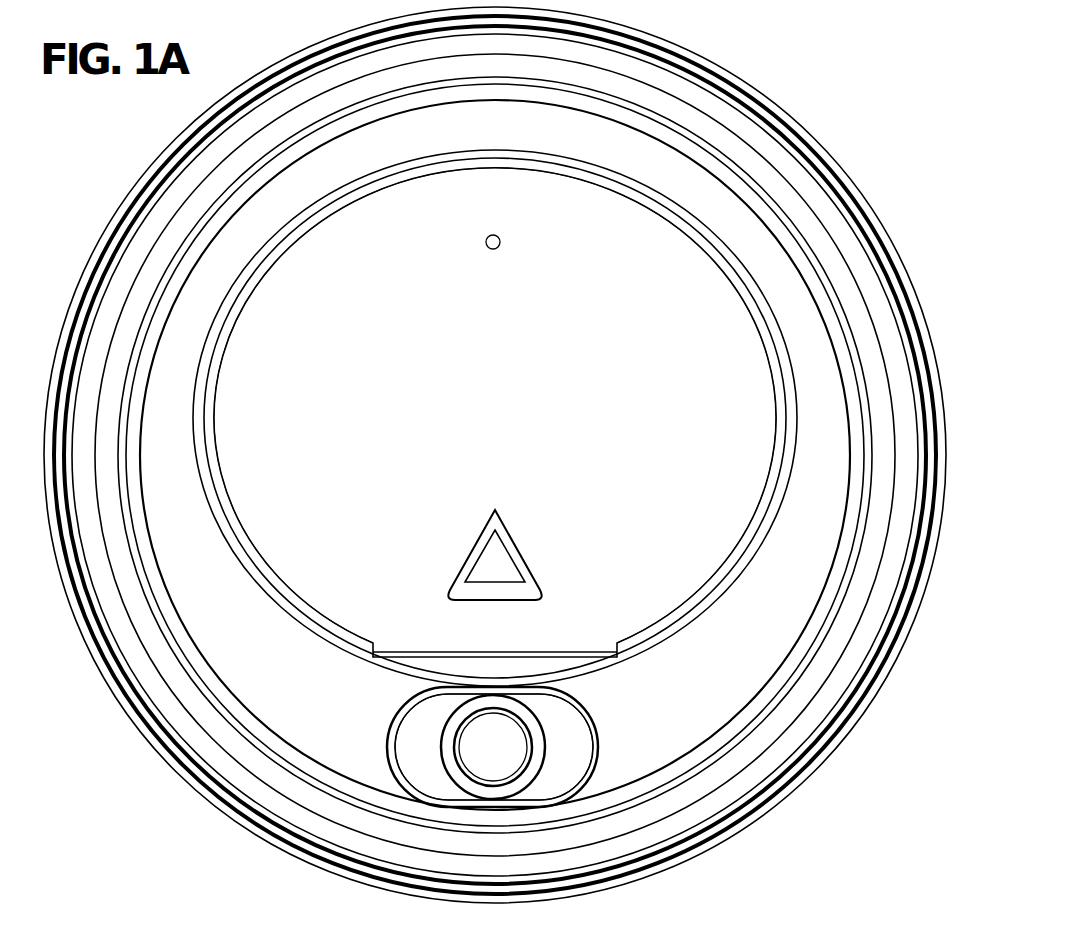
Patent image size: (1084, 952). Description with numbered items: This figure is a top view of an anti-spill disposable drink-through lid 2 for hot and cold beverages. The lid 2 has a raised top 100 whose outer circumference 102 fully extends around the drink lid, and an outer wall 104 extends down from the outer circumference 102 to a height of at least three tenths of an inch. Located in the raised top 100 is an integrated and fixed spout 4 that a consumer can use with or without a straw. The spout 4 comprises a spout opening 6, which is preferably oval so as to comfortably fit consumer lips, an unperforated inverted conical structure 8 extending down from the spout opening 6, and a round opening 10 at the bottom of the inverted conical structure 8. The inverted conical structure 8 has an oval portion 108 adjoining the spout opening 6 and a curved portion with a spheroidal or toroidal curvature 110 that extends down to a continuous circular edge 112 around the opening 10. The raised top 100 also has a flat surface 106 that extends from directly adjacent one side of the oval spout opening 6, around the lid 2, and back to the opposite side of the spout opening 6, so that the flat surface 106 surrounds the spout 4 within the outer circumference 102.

The anti-spill disposable drink-through lid 2 is at (880, 61).
The integrated spout 4 is at (632, 761).
The spout opening 6 is at (405, 770).
The inverted conical structure 8 is at (385, 745).
The opening 10 is at (500, 742).
The raised top 100 is at (735, 686).
The outer circumference 102 is at (760, 217).
The outer wall 104 is at (165, 668).
The flat surface 106 is at (237, 243).
The oval portion 108 is at (410, 738).
The curved portion with a spheroidal or toroidal curvature 110 is at (465, 703).
The continuous circular edge 112 is at (498, 703).